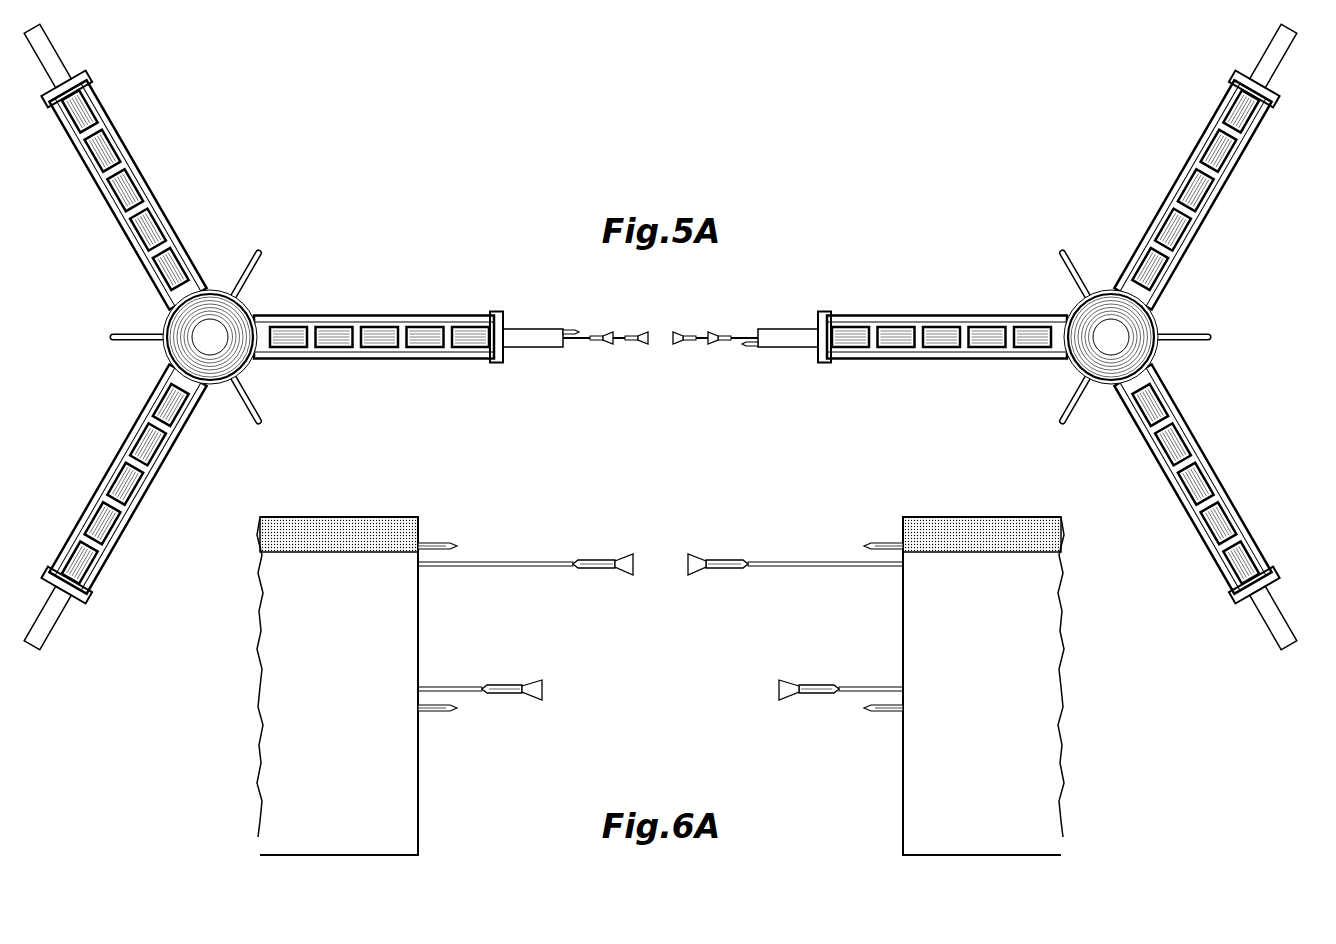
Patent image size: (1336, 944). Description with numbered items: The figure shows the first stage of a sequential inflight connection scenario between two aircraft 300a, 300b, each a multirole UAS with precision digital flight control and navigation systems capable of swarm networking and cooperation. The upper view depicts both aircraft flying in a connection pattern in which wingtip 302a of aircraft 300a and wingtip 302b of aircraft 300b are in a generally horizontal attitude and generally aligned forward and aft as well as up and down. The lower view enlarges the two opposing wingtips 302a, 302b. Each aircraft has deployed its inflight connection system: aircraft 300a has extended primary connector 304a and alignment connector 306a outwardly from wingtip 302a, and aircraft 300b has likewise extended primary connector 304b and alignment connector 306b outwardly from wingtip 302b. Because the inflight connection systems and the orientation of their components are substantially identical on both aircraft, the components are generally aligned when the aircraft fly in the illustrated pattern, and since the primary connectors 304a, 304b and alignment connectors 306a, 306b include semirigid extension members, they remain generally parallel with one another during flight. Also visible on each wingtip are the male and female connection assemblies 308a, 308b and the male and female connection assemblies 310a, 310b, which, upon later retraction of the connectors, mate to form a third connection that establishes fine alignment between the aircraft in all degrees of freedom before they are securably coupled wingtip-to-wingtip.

In FIG. 5A, the aircraft 300a is at (364, 316).
In FIG. 5A, the aircraft 300b is at (960, 316).
In FIG. 5A, the wingtip 302a is at (524, 328).
In FIG. 6A, the wingtip 302a is at (334, 530).
In FIG. 5A, the wingtip 302b is at (802, 328).
In FIG. 6A, the wingtip 302b is at (997, 530).
In FIG. 5A, the primary connector 304a is at (636, 333).
In FIG. 6A, the primary connector 304a is at (600, 561).
In FIG. 5A, the primary connector 304b is at (688, 344).
In FIG. 6A, the primary connector 304b is at (724, 561).
In FIG. 5A, the alignment connector 306a is at (598, 344).
In FIG. 6A, the alignment connector 306a is at (507, 686).
In FIG. 5A, the alignment connector 306b is at (722, 336).
In FIG. 6A, the alignment connector 306b is at (817, 686).
In FIG. 5A, the male and female connection assembly 308a is at (573, 330).
In FIG. 6A, the male and female connection assembly 308a is at (436, 543).
In FIG. 5A, the male and female connection assembly 308b is at (748, 349).
In FIG. 6A, the male and female connection assembly 308b is at (892, 543).
In FIG. 6A, the male and female connection assembly 310a is at (445, 712).
In FIG. 6A, the male and female connection assembly 310b is at (884, 712).